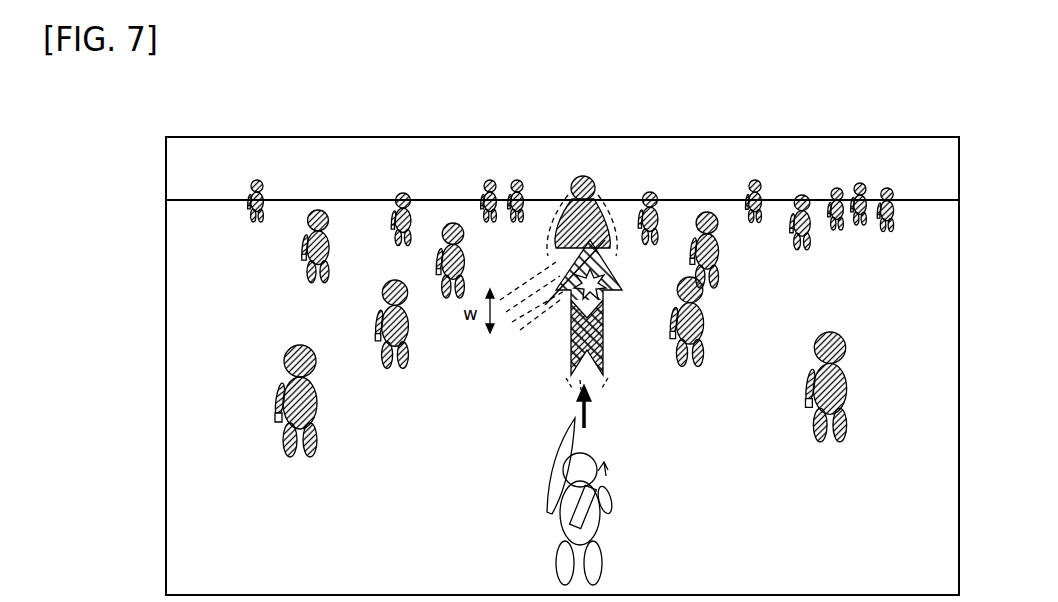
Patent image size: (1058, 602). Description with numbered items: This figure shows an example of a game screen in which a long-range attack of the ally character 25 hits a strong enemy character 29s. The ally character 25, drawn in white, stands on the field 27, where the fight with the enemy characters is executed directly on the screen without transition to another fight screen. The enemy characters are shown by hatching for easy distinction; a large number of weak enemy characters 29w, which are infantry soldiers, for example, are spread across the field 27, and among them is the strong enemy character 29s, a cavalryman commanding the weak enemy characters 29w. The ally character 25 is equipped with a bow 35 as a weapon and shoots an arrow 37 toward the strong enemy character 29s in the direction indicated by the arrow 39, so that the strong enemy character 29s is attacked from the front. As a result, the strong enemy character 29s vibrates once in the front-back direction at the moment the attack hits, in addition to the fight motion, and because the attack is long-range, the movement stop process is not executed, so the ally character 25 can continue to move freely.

The ally character 25 is at (600, 553).
The field 27 is at (927, 210).
The strong enemy character 29s is at (581, 176).
The weak enemy character 29w is at (290, 350).
The bow 35 is at (545, 490).
The arrow 37 is at (566, 336).
The arrow (direction) 39 is at (590, 403).